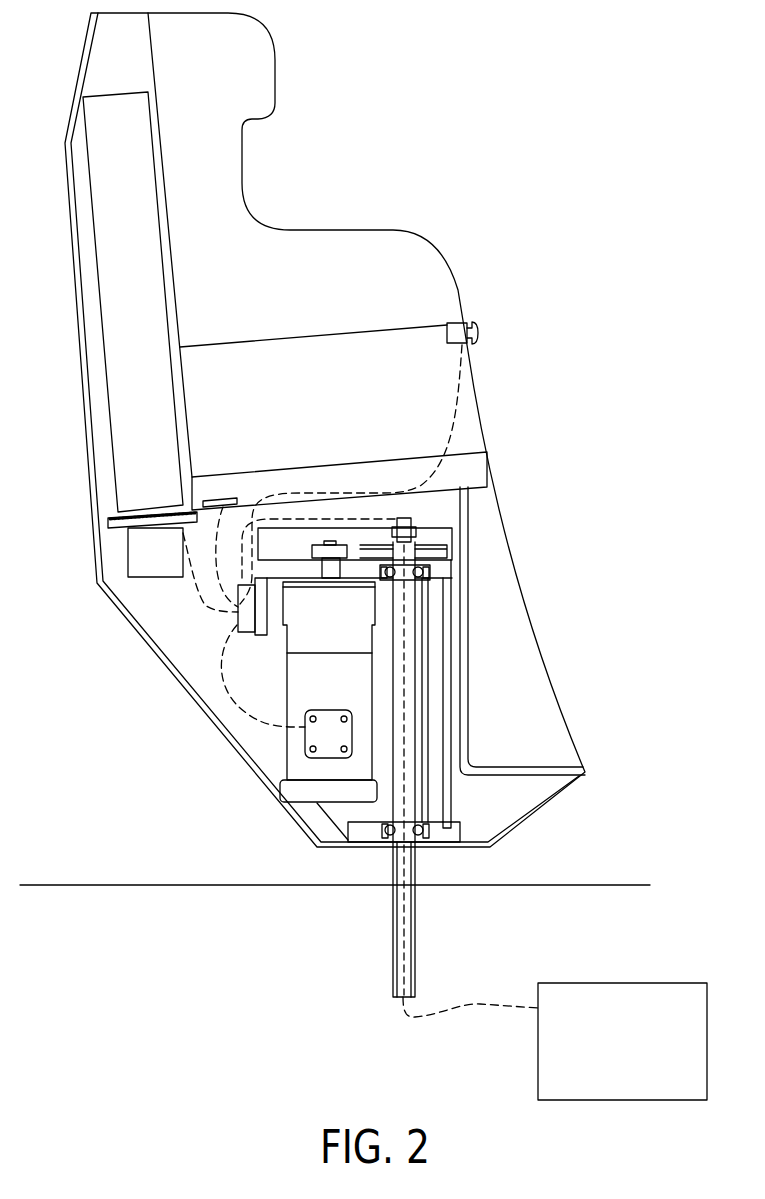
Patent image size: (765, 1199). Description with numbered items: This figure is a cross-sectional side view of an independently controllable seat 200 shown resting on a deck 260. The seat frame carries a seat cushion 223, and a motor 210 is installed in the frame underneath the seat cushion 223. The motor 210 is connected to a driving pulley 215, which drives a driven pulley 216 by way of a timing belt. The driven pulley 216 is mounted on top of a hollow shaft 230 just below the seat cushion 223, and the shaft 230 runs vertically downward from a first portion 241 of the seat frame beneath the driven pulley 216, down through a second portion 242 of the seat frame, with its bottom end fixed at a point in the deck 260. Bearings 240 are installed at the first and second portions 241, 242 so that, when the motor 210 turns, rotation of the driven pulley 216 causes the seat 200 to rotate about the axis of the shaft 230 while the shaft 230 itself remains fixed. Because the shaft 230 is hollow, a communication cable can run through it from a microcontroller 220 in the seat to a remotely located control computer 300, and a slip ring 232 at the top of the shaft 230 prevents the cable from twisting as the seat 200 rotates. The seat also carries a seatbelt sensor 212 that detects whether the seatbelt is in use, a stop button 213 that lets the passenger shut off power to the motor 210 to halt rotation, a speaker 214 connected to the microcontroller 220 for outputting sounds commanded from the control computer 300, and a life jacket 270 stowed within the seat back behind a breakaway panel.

The seat 200 is at (277, 73).
The life jacket 270 is at (127, 263).
The stop button 213 is at (480, 322).
The seat cushion 223 is at (475, 467).
The seatbelt sensor 212 is at (223, 499).
The speaker 214 is at (123, 547).
The driving pulley 215 is at (325, 541).
The driven pulley 216 is at (380, 545).
The slip ring 232 is at (416, 531).
The hollow shaft 230 is at (417, 941).
The first portion of the seat frame 241 is at (445, 570).
The second portion of the seat frame 242 is at (448, 832).
The bearings 240 is at (432, 820).
The microcontroller 220 is at (237, 607).
The motor 210 is at (313, 692).
The deck 260 is at (262, 888).
The control computer 300 is at (622, 982).